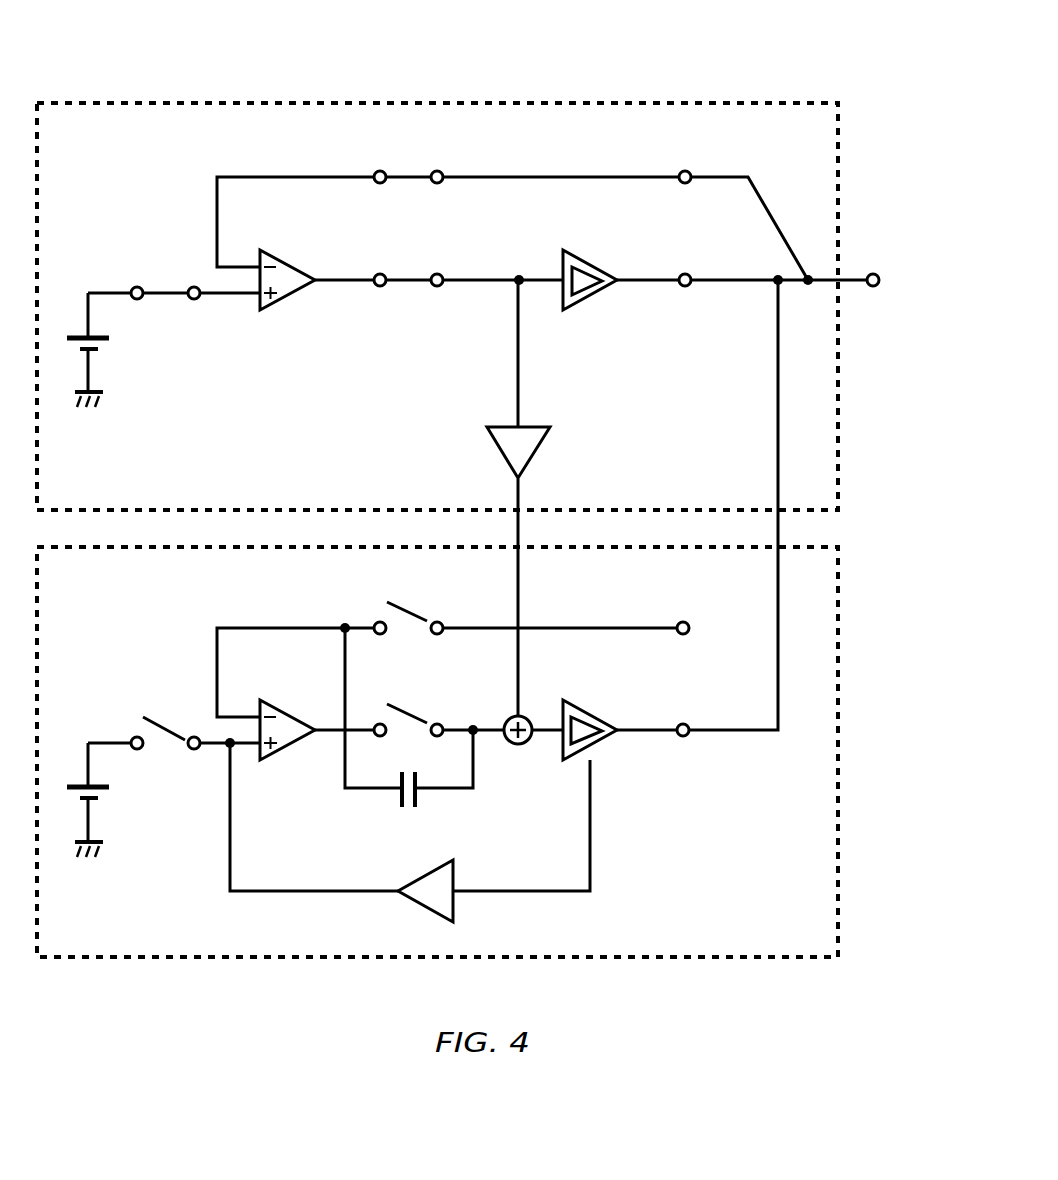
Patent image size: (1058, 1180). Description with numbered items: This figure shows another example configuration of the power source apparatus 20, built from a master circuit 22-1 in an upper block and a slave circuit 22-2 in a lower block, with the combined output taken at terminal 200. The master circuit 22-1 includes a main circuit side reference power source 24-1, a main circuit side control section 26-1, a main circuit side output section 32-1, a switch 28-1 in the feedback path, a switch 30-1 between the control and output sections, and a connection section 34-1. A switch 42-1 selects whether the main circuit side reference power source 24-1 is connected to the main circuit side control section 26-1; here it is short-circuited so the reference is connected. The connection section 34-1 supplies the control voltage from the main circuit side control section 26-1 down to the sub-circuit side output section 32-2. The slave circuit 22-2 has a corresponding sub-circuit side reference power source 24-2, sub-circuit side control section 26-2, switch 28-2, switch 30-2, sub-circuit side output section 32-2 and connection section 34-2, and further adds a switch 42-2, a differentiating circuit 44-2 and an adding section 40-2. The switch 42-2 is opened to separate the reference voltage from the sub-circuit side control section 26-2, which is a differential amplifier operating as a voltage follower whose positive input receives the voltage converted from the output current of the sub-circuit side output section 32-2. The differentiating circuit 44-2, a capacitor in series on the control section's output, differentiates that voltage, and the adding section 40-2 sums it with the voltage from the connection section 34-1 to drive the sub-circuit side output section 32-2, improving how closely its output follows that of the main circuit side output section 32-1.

The power source apparatus 20 is at (833, 46).
The master circuit 22-1 is at (838, 448).
The slave circuit 22-2 is at (838, 893).
The main circuit side reference power source 24-1 is at (109, 338).
The sub-circuit side reference power source 24-2 is at (109, 787).
The main circuit side control section 26-1 is at (313, 243).
The sub-circuit side control section 26-2 is at (308, 693).
The switch 28-1 is at (463, 148).
The switch 28-2 is at (378, 624).
The switch 30-1 is at (440, 275).
The switch 30-2 is at (462, 703).
The main circuit side output section 32-1 is at (617, 242).
The sub-circuit side output section 32-2 is at (562, 750).
The connection section 34-1 is at (535, 452).
The connection section 34-2 is at (425, 907).
The adding section 40-2 is at (530, 718).
The switch 42-1 is at (135, 287).
The switch 42-2 is at (135, 737).
The differentiating circuit 44-2 is at (402, 806).
The output terminal 200 is at (897, 280).